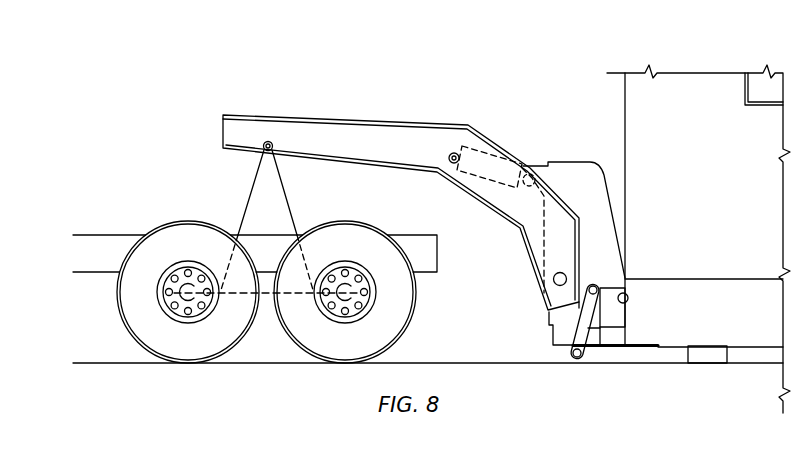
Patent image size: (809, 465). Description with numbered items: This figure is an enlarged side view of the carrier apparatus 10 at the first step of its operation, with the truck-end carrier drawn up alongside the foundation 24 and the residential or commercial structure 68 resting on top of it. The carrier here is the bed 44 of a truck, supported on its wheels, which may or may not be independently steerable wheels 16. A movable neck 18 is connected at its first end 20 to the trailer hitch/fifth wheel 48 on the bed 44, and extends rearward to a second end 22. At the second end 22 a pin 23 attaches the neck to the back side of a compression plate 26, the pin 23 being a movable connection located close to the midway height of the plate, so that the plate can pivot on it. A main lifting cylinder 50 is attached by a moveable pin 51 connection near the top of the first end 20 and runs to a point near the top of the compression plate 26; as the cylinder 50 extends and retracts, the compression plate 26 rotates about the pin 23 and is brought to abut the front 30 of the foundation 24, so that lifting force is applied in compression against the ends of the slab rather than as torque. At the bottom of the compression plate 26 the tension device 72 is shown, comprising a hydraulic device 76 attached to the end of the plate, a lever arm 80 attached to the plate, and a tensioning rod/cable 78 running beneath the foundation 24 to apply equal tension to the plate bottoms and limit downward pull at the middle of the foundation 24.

The carrier apparatus 10 is at (418, 72).
The steerable wheels 16 is at (121, 316).
The movable neck 18 is at (345, 118).
The first end 20 is at (268, 141).
The second end 22 is at (552, 320).
The pin 23 is at (551, 276).
The foundation 24 is at (735, 292).
The compression plate 26 is at (616, 316).
The front 30 is at (628, 302).
The bed 44 is at (113, 234).
The trailer hitch/fifth wheel 48 is at (246, 202).
The main lifting cylinder 50 is at (493, 170).
The moveable pin 51 is at (449, 158).
The residential or commercial structure 68 is at (721, 190).
The tension device 72 is at (567, 338).
The hydraulic device 76 is at (612, 333).
The tensioning rod/cable 78 is at (634, 351).
The lever arm 80 is at (592, 285).